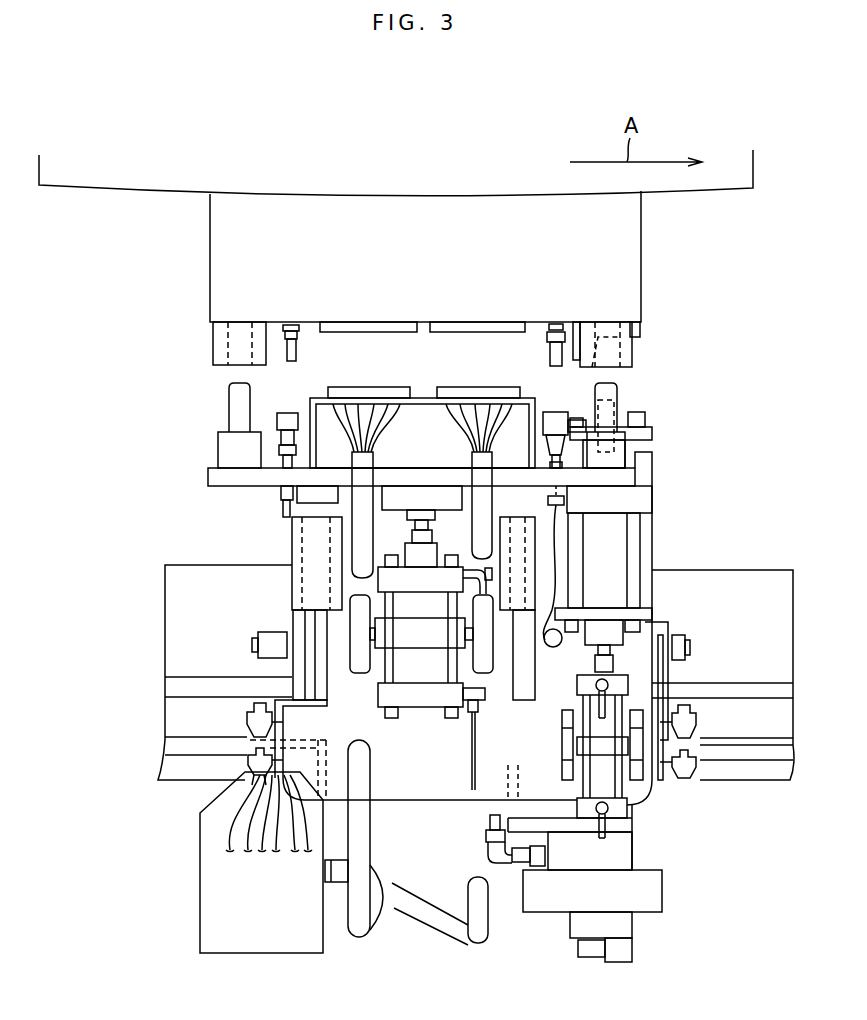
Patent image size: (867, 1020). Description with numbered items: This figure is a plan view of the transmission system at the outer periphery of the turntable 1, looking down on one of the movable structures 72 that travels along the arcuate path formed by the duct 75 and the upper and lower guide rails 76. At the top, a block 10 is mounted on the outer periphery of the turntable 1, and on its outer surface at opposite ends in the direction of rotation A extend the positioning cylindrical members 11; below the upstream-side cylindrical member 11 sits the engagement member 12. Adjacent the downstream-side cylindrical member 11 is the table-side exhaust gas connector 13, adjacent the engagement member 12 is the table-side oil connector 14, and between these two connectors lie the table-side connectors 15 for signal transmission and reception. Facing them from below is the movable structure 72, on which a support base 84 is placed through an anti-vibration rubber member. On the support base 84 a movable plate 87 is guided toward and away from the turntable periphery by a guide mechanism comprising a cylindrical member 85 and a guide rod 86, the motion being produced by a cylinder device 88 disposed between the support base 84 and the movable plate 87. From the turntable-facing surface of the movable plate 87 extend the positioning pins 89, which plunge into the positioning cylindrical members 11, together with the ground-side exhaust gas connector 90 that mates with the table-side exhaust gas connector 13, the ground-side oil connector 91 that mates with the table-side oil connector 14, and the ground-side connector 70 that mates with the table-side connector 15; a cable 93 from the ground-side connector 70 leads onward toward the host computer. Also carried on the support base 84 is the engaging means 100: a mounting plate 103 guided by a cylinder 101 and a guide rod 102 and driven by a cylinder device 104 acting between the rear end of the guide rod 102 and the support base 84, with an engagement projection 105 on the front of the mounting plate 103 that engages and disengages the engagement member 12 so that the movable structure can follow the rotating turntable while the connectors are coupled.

The turntable 1 is at (118, 172).
The block 10 is at (468, 194).
The positioning cylindrical member 11 is at (213, 342).
The engagement member 12 is at (604, 322).
The table-side exhaust gas connector 13 is at (290, 322).
The table-side oil connector 14 is at (553, 335).
The table-side connector 15 is at (446, 322).
The ground-side connector 70 is at (405, 397).
The movable structure 72 is at (283, 665).
The duct 75 is at (170, 657).
The guide rail 76 is at (175, 698).
The support base 84 is at (432, 790).
The cylindrical member 85 is at (300, 543).
The guide rod 86 is at (330, 677).
The movable plate 87 is at (208, 480).
The cylinder device 88 is at (418, 695).
The positioning pin 89 is at (229, 396).
The ground-side exhaust gas connector 90 is at (288, 412).
The ground-side oil connector 91 is at (553, 412).
The cable 93 is at (448, 420).
The engaging means 100 is at (663, 476).
The cylinder 101 is at (657, 505).
The guide rod 102 is at (643, 560).
The mounting plate 103 is at (652, 432).
The cylinder device 104 is at (600, 785).
The engagement projection 105 is at (617, 400).